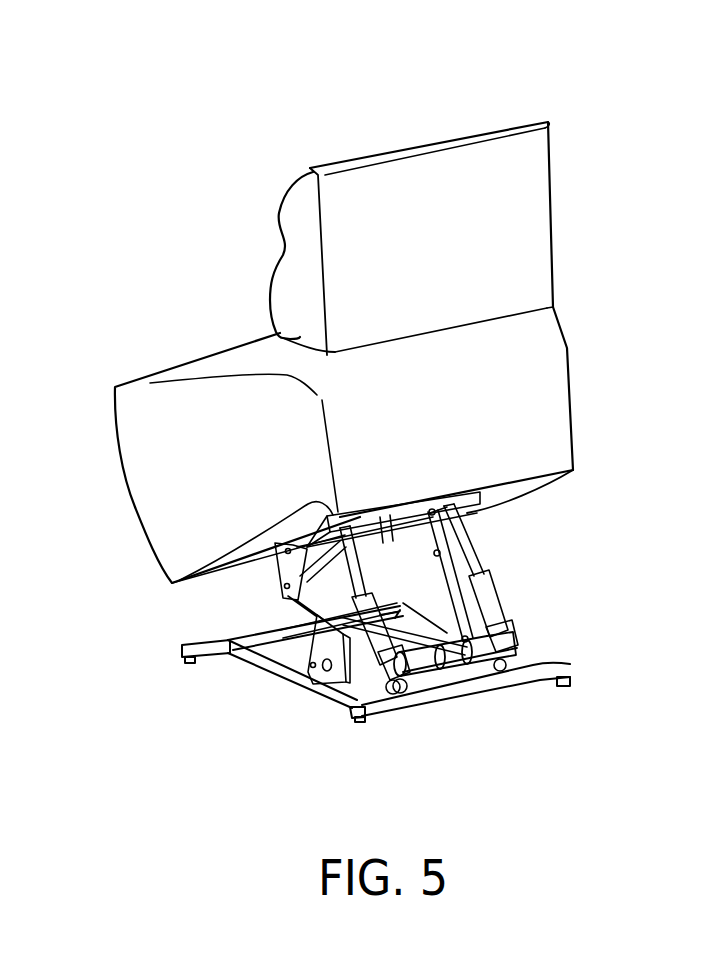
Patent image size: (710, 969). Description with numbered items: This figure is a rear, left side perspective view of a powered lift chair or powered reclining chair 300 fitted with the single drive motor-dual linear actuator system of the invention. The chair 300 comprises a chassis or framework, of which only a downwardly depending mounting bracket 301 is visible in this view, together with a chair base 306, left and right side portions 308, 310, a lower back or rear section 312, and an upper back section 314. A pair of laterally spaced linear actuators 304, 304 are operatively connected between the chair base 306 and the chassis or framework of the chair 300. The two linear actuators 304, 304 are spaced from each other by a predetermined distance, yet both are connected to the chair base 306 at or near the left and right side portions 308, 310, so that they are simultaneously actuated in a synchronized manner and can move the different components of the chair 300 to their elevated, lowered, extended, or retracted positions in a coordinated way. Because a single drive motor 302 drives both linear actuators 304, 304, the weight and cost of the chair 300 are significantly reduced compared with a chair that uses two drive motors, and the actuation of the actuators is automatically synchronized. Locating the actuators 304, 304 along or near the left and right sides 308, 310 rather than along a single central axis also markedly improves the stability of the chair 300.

The powered lift chair or powered reclining chair 300 is at (702, 63).
The mounting bracket 301 is at (283, 567).
The drive motor 302 is at (450, 668).
The linear actuators 304 is at (368, 641).
The chair base 306 is at (490, 682).
The left side portion 308 is at (245, 475).
The right side portion 310 is at (570, 392).
The lower back or rear section 312 is at (467, 427).
The upper back section 314 is at (415, 182).